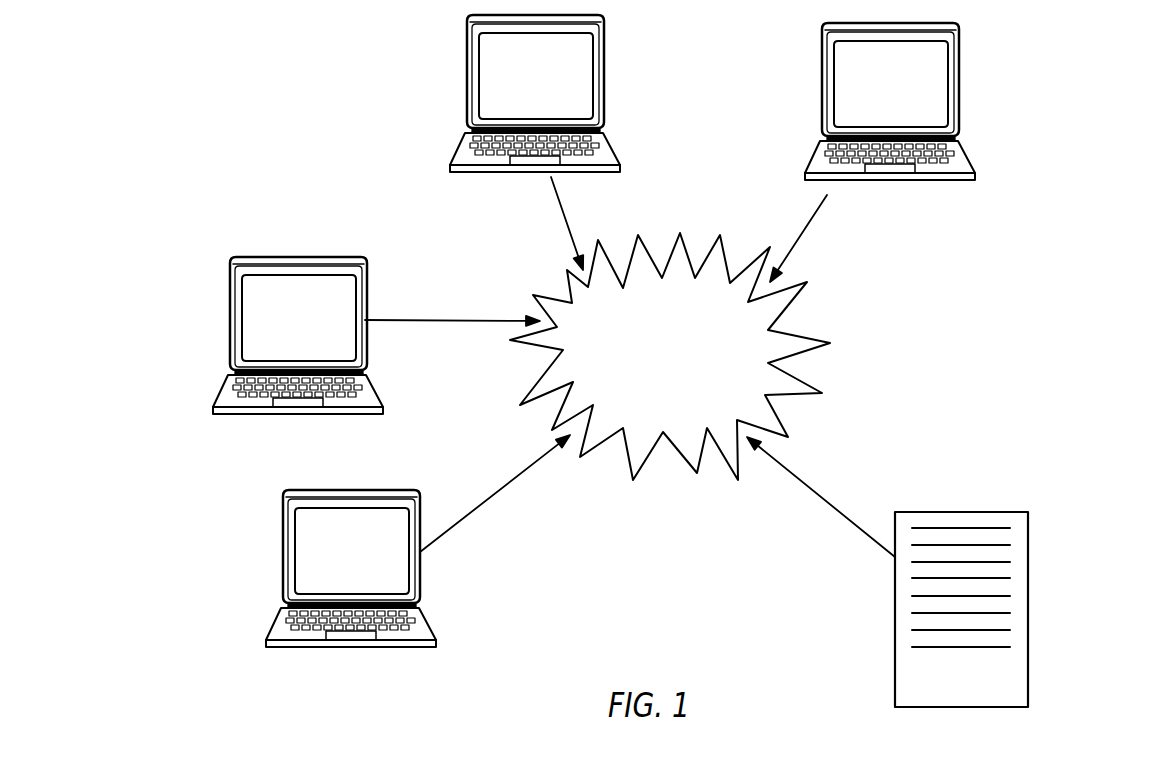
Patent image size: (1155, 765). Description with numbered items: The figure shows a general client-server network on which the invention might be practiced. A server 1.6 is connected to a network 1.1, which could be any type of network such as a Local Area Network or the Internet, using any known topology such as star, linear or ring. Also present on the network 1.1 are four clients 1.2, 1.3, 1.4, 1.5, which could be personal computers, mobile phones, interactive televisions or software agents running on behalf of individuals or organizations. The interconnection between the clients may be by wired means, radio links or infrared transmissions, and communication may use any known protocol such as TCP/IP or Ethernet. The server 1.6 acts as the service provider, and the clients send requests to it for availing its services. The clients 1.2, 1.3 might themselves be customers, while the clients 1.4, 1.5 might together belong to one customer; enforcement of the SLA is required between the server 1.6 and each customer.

The network 1.1 is at (630, 367).
The client 1.2 is at (926, 101).
The client 1.3 is at (496, 93).
The client 1.4 is at (260, 335).
The client 1.5 is at (314, 568).
The server 1.6 is at (1002, 609).